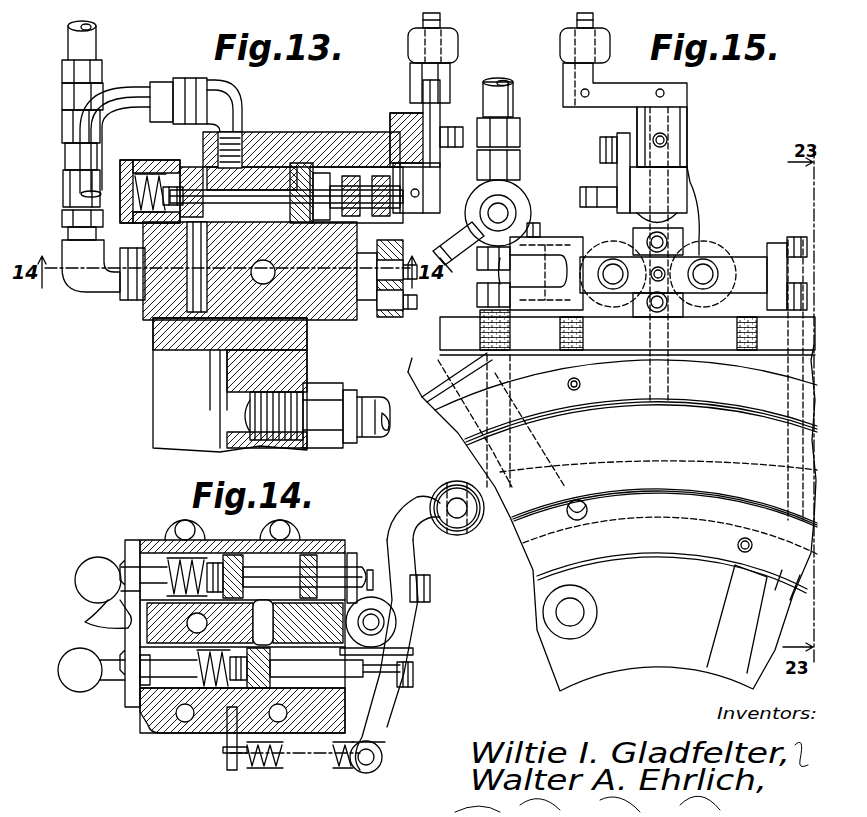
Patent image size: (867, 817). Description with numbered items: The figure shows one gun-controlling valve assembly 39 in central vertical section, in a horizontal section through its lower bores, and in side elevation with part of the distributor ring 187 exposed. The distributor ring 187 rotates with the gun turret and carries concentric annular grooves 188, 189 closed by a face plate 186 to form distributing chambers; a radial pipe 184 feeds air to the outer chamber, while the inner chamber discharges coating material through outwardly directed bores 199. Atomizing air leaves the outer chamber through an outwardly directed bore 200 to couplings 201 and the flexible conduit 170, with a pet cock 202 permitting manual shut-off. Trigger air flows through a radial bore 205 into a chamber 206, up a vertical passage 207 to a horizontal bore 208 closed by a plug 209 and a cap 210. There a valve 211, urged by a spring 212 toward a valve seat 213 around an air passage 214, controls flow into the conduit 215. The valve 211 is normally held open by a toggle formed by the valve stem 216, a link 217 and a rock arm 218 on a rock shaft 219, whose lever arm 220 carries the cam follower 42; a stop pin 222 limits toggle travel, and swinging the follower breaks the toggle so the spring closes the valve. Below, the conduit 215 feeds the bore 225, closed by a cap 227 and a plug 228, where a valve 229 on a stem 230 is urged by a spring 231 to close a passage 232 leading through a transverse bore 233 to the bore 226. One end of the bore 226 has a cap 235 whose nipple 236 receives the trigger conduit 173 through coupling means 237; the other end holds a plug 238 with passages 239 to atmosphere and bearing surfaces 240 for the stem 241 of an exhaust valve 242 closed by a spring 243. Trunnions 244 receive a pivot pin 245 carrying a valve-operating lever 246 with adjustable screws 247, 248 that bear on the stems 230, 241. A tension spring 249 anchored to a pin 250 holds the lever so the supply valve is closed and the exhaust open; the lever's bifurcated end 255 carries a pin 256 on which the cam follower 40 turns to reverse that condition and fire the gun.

In FIG. 13, the gun-controlling valve assembly 39 is at (284, 142).
In FIG. 15, the gun-controlling valve assembly 39 is at (705, 188).
In FIG. 15, the cam follower 40 is at (547, 238).
In FIG. 13, the cam follower 42 is at (456, 48).
In FIG. 15, the cam follower 42 is at (606, 48).
In FIG. 15, the flexible conduit 170 is at (509, 102).
In FIG. 13, the flexible conduit 173 is at (84, 41).
In FIG. 13, the radial pipe 184 is at (377, 428).
In FIG. 13, the face plate 186 is at (312, 446).
In FIG. 15, the distributor ring 187 is at (411, 367).
In FIG. 13, the annular groove 188 is at (258, 414).
In FIG. 15, the annular groove 188 is at (678, 415).
In FIG. 15, the annular groove 189 is at (676, 506).
In FIG. 15, the outwardly directed bore 199 is at (560, 463).
In FIG. 15, the outwardly directed bore 200 is at (566, 388).
In FIG. 15, the coupling 201 is at (521, 136).
In FIG. 15, the pet cock 202 is at (482, 255).
In FIG. 13, the radial bore 205 is at (217, 370).
In FIG. 15, the radial bore 205 is at (655, 334).
In FIG. 13, the chamber 206 is at (160, 325).
In FIG. 13, the vertical passage 207 is at (195, 285).
In FIG. 14, the vertical passage 207 is at (137, 684).
In FIG. 13, the horizontal bore 208 is at (192, 178).
In FIG. 13, the plug 209 is at (248, 172).
In FIG. 13, the cap 210 is at (123, 167).
In FIG. 13, the valve 211 is at (190, 183).
In FIG. 13, the spring 212 is at (120, 186).
In FIG. 13, the valve seat 213 is at (205, 214).
In FIG. 13, the air passage 214 is at (264, 216).
In FIG. 13, the conduit 215 is at (136, 104).
In FIG. 14, the conduit 215 is at (110, 619).
In FIG. 13, the valve stem 216 is at (285, 192).
In FIG. 13, the link 217 is at (345, 186).
In FIG. 13, the rock arm 218 is at (392, 202).
In FIG. 15, the rock arm 218 is at (688, 182).
In FIG. 13, the rock shaft 219 is at (414, 125).
In FIG. 15, the rock shaft 219 is at (663, 126).
In FIG. 13, the lever arm 220 is at (446, 90).
In FIG. 15, the lever arm 220 is at (619, 96).
In FIG. 15, the stop pin 222 is at (613, 183).
In FIG. 14, the bore 225 is at (208, 560).
In FIG. 14, the bore 226 is at (213, 700).
In FIG. 14, the cap 227 is at (128, 549).
In FIG. 14, the plug 228 is at (330, 566).
In FIG. 14, the valve 229 is at (288, 525).
In FIG. 14, the stem 230 is at (337, 575).
In FIG. 14, the spring 231 is at (178, 526).
In FIG. 14, the passage 232 is at (304, 565).
In FIG. 14, the transverse bore 233 is at (275, 621).
In FIG. 13, the cap 235 is at (125, 288).
In FIG. 14, the cap 235 is at (142, 708).
In FIG. 13, the nipple 236 is at (62, 247).
In FIG. 14, the nipple 236 is at (80, 678).
In FIG. 13, the coupling means 237 is at (67, 127).
In FIG. 14, the plug 238 is at (335, 688).
In FIG. 14, the passages 239 is at (352, 657).
In FIG. 14, the bearing surfaces 240 is at (405, 682).
In FIG. 14, the stem 241 is at (376, 666).
In FIG. 14, the valve 242 is at (240, 700).
In FIG. 14, the spring 243 is at (178, 714).
In FIG. 13, the trunnions 244 is at (392, 318).
In FIG. 14, the trunnions 244 is at (352, 580).
In FIG. 15, the trunnions 244 is at (676, 240).
In FIG. 13, the pivot pin 245 is at (380, 308).
In FIG. 14, the pivot pin 245 is at (378, 624).
In FIG. 15, the pivot pin 245 is at (685, 231).
In FIG. 13, the valve-operating lever 246 is at (368, 300).
In FIG. 14, the valve-operating lever 246 is at (400, 577).
In FIG. 15, the valve-operating lever 246 is at (706, 264).
In FIG. 14, the adjustable screw 247 is at (431, 586).
In FIG. 15, the adjustable screw 247 is at (712, 286).
In FIG. 14, the adjustable screw 248 is at (411, 674).
In FIG. 15, the adjustable screw 248 is at (614, 267).
In FIG. 14, the tension spring 249 is at (265, 770).
In FIG. 14, the pin 250 is at (231, 770).
In FIG. 14, the bifurcated end 255 is at (447, 493).
In FIG. 15, the bifurcated end 255 is at (539, 232).
In FIG. 15, the pin 256 is at (518, 306).